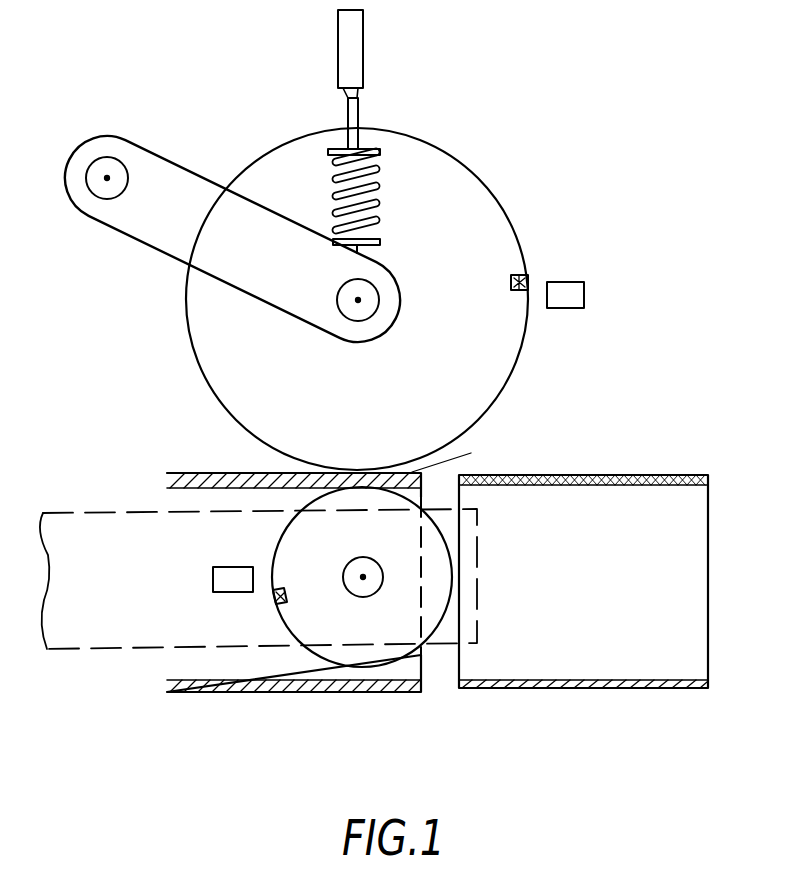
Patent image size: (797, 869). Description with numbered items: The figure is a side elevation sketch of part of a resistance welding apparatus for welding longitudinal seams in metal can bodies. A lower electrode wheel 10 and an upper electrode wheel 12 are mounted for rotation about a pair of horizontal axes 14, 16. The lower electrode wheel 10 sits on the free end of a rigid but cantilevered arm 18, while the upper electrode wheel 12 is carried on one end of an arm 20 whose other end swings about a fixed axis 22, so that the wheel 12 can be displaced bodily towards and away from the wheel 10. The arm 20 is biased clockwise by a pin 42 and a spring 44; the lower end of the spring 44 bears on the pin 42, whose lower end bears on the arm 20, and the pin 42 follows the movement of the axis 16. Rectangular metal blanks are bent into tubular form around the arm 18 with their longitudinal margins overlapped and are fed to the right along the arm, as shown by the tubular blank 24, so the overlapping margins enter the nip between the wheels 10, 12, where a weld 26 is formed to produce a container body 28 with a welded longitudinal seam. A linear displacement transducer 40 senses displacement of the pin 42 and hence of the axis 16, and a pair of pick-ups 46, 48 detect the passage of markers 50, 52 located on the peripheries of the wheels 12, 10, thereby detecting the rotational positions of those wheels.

The lower electrode wheel 10 is at (425, 628).
The upper electrode wheel 12 is at (474, 401).
The horizontal axis 14 is at (363, 577).
The horizontal axis 16 is at (358, 300).
The cantilevered arm 18 is at (100, 650).
The arm 20 is at (155, 218).
The fixed axis 22 is at (107, 178).
The tubular blank 24 is at (245, 688).
The weld 26 is at (457, 456).
The container body 28 is at (661, 684).
The linear displacement transducer 40 is at (352, 48).
The pin 42 is at (356, 120).
The spring 44 is at (378, 200).
The pick-up 46 is at (571, 296).
The pick-up 48 is at (213, 576).
The marker 50 is at (514, 276).
The marker 52 is at (270, 602).